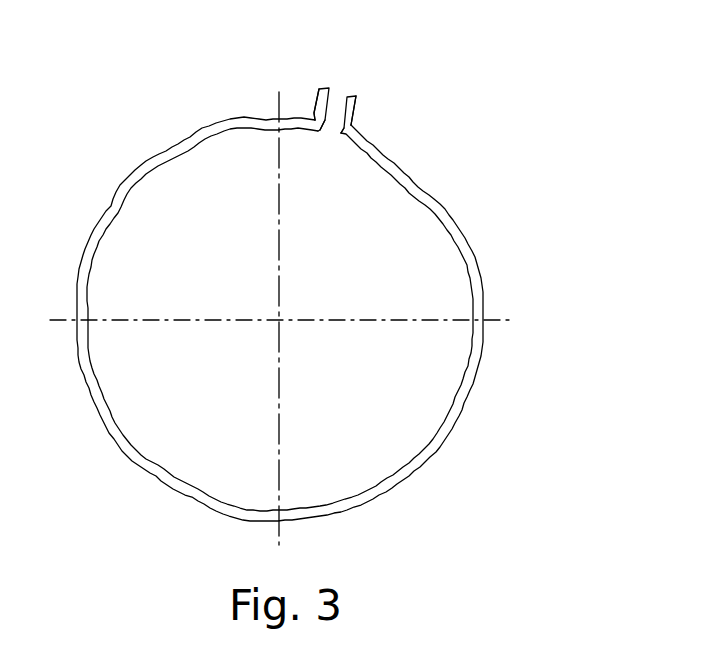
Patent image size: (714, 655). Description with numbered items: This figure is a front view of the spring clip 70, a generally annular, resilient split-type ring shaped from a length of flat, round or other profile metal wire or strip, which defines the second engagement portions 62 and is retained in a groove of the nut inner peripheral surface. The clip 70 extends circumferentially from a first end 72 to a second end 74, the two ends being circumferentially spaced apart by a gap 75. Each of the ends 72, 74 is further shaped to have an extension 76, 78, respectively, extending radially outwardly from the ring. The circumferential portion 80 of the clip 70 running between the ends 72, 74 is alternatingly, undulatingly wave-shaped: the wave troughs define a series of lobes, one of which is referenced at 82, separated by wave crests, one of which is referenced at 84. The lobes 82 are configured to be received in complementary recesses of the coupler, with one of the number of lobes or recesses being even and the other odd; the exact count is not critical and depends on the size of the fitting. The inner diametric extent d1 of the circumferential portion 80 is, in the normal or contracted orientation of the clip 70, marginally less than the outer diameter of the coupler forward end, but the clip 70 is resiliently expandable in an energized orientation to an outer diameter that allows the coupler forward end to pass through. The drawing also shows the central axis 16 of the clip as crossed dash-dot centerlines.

The central axis 16 is at (289, 322).
The second engagement portions 62 is at (383, 243).
The spring clip 70 is at (339, 267).
The first end 72 is at (321, 89).
The second end 74 is at (355, 96).
The gap 75 is at (333, 143).
The extension 76 is at (315, 109).
The extension 78 is at (356, 114).
The circumferential portion 80 is at (327, 319).
The lobe 82 is at (473, 356).
The wave crest 84 is at (435, 453).
The inner diametric extent d1 is at (118, 396).